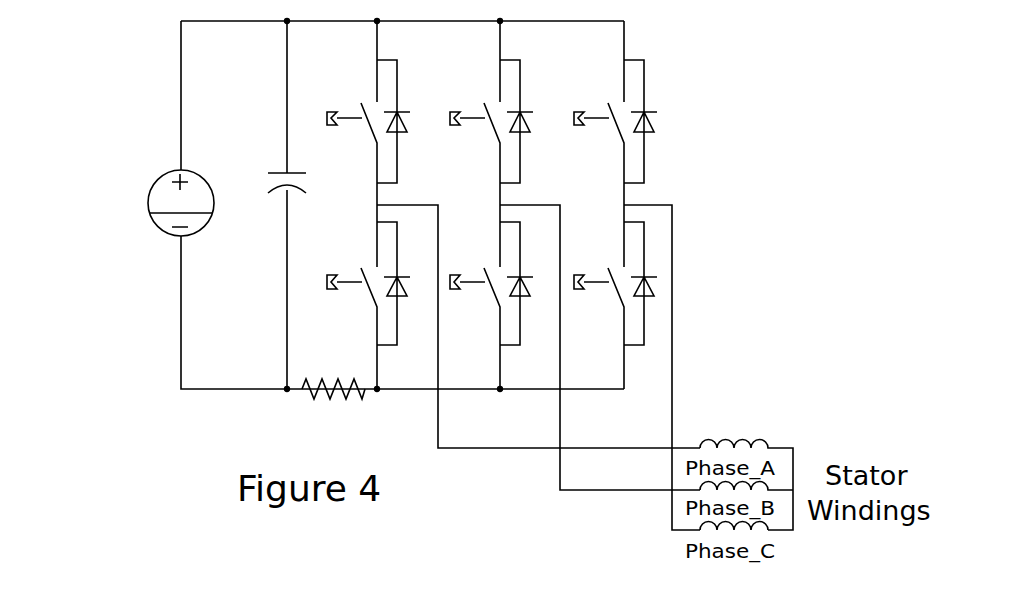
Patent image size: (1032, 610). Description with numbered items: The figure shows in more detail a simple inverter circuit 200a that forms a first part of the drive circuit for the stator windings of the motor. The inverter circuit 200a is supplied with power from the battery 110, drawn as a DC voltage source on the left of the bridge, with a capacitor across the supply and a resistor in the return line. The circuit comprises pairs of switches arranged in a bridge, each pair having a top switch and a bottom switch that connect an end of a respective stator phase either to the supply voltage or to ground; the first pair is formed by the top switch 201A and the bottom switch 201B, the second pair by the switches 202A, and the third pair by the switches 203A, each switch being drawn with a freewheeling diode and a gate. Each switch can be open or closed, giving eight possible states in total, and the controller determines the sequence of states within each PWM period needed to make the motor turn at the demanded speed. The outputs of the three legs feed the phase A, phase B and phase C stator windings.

The battery 110 is at (167, 235).
The inverter circuit 200a is at (584, 194).
The top switch of first switch pair 201A is at (353, 113).
The bottom switch of first switch pair 201B is at (353, 297).
The switch of second switch pair 202A is at (476, 205).
The switch of third switch pair 203A is at (600, 205).